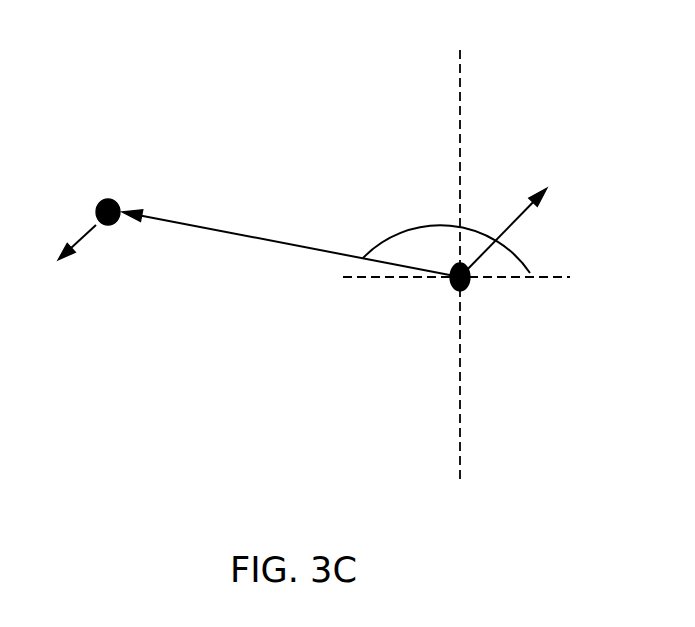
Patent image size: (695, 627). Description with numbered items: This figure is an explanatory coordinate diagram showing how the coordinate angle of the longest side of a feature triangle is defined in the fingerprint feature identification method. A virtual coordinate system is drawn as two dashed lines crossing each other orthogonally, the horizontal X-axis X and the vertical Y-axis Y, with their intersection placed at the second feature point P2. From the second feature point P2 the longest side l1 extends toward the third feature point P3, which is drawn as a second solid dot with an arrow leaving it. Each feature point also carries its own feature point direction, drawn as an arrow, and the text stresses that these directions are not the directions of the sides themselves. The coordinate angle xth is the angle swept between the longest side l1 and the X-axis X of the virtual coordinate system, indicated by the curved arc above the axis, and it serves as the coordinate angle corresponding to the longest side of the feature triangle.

The second feature point P2 is at (498, 264).
The third feature point P3 is at (104, 237).
The longest side l1 is at (291, 252).
The coordinate angle xth is at (446, 233).
The X-axis X is at (485, 265).
The Y-axis Y is at (459, 240).